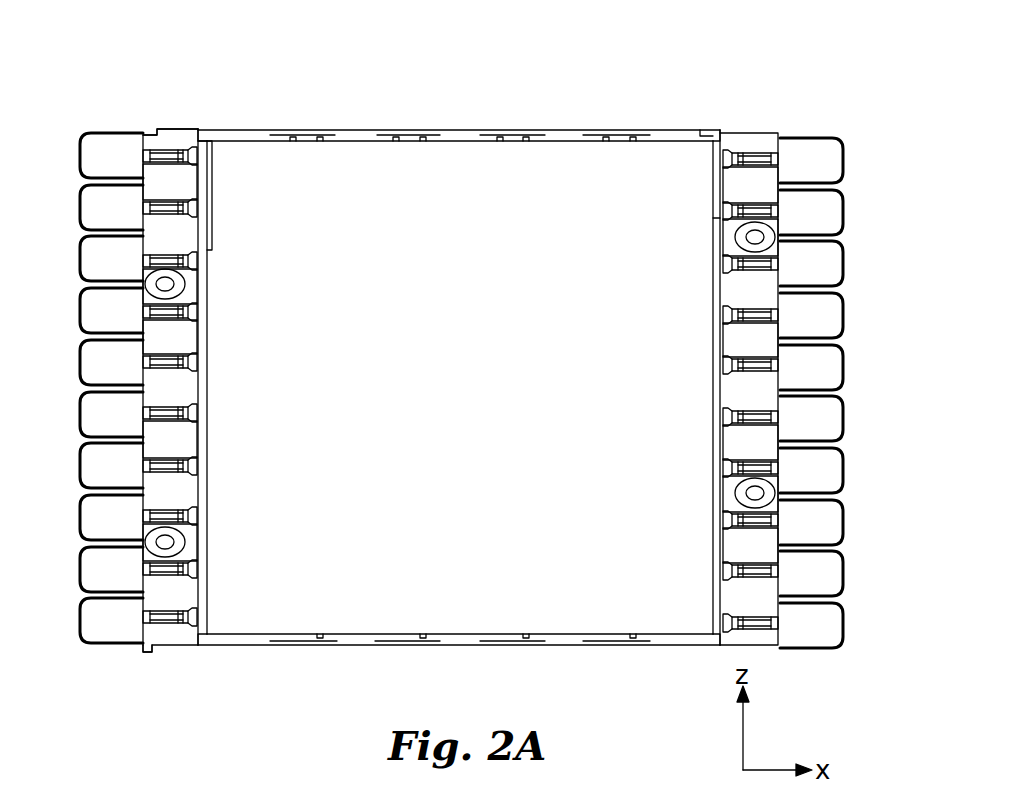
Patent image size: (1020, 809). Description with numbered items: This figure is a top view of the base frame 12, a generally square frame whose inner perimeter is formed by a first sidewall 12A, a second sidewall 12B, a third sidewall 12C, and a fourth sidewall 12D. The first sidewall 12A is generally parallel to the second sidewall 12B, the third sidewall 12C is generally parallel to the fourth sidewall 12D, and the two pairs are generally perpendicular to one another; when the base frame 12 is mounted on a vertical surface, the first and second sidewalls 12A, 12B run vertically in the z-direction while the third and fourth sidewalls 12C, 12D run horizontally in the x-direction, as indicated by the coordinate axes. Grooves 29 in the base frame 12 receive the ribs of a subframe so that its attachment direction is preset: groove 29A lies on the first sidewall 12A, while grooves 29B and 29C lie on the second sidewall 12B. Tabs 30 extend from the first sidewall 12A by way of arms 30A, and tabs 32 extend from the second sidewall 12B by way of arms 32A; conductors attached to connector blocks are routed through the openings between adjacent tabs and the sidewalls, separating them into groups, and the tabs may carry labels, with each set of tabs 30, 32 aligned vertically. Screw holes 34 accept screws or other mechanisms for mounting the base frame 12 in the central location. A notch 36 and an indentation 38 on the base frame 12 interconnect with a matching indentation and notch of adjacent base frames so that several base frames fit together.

The base frame 12 is at (460, 375).
The first sidewall 12A is at (209, 136).
The second sidewall 12B is at (674, 150).
The third sidewall 12C is at (622, 650).
The fourth sidewall 12D is at (598, 133).
The grooves 29 is at (422, 152).
The groove 29A is at (213, 250).
The groove 29B is at (710, 140).
The groove 29C is at (718, 224).
The tabs 30 is at (68, 468).
The arms 30A is at (178, 220).
The tabs 32 is at (858, 524).
The arms 32A is at (752, 300).
The screw holes 34 is at (164, 284).
The notch 36 is at (152, 652).
The indentation 38 is at (150, 131).